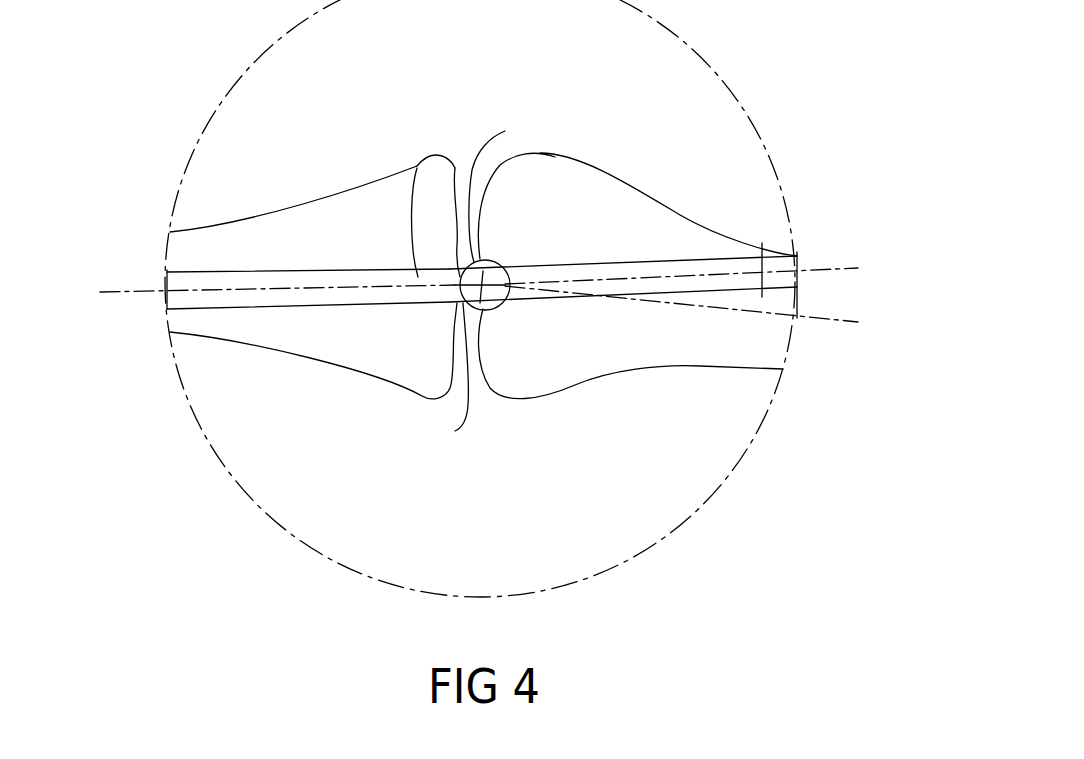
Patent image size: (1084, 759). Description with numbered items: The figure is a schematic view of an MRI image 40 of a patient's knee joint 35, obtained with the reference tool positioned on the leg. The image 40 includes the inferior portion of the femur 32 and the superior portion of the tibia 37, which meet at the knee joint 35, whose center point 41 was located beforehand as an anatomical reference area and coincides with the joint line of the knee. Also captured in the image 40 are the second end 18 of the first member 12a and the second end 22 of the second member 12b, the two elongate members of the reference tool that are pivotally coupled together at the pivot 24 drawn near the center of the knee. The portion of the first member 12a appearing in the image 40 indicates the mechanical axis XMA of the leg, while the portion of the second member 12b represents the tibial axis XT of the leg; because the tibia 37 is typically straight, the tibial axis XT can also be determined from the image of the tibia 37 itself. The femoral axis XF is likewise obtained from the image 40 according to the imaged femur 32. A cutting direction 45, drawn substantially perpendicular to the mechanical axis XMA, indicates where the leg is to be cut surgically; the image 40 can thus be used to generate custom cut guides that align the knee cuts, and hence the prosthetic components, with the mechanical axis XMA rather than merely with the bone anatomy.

The first member 12a is at (699, 238).
The second member 12b is at (195, 270).
The second end 18 is at (568, 272).
The second end 22 is at (417, 185).
The hub / rotation axis 24 is at (503, 132).
The femur 32 is at (600, 212).
The knee joint 35 is at (452, 125).
The tibia 37 is at (368, 198).
The image 40 is at (733, 470).
The center point 41 is at (455, 431).
The cutting direction 45 is at (762, 256).
The tibial axis XT is at (259, 294).
The mechanical axis XMA is at (713, 271).
The femoral axis XF is at (699, 311).